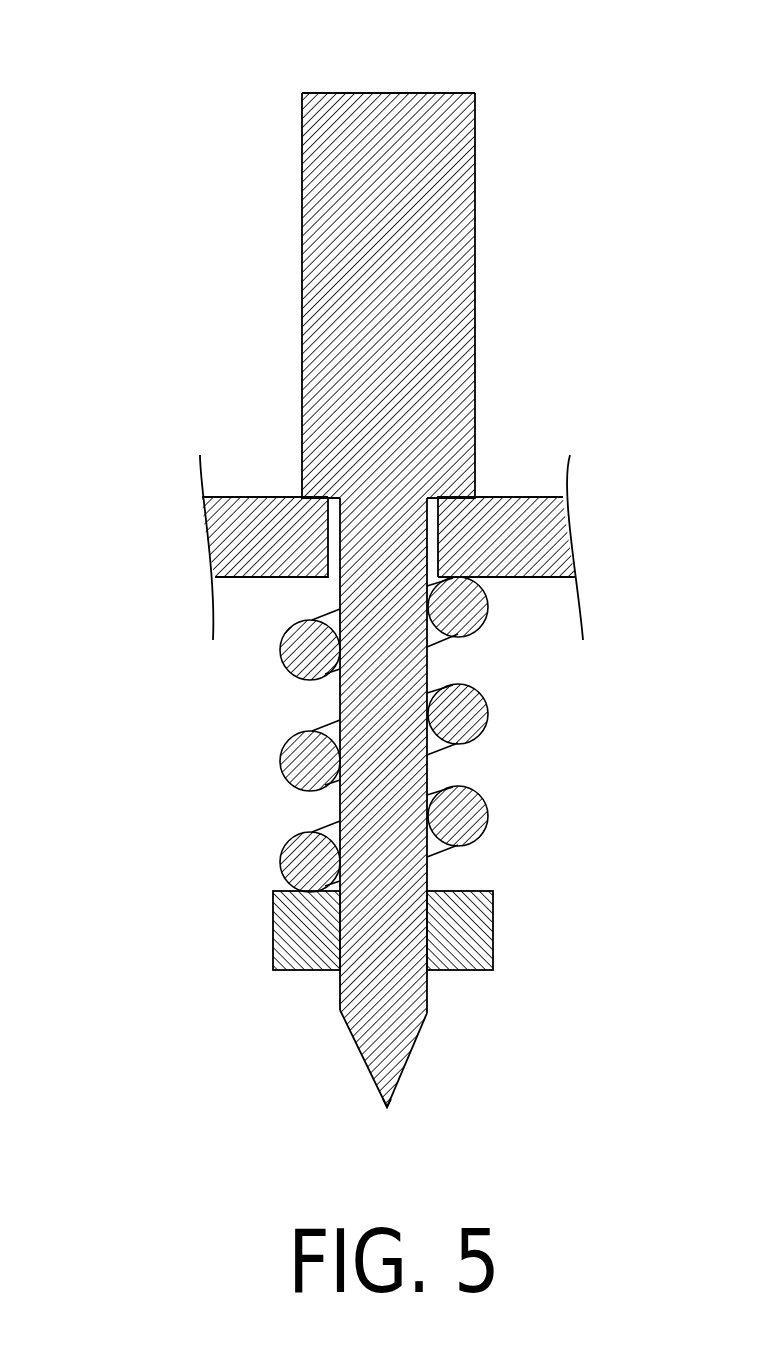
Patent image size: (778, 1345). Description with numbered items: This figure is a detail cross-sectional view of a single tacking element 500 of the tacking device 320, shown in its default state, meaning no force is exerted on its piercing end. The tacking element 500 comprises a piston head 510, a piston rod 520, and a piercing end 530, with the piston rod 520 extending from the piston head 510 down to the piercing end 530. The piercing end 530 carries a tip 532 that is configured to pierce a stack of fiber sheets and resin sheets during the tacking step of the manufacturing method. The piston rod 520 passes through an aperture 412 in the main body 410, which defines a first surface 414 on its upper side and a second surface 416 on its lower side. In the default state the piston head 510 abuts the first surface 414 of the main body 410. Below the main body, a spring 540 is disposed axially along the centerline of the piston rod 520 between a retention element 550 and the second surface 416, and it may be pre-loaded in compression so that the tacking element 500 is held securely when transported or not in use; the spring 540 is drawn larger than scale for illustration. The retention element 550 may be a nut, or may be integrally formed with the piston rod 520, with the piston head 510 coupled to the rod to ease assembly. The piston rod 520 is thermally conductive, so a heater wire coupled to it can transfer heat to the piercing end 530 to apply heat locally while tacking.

The tacking device 320 is at (248, 63).
The tacking element 500 is at (270, 222).
The piston head 510 is at (378, 333).
The piston rod 520 is at (370, 707).
The piercing end 530 is at (383, 1058).
The tip 532 is at (387, 1107).
The spring 540 is at (308, 861).
The retention element 550 is at (298, 950).
The main body 410 is at (228, 538).
The aperture 412 is at (440, 536).
The first surface 414 is at (262, 497).
The second surface 416 is at (517, 578).